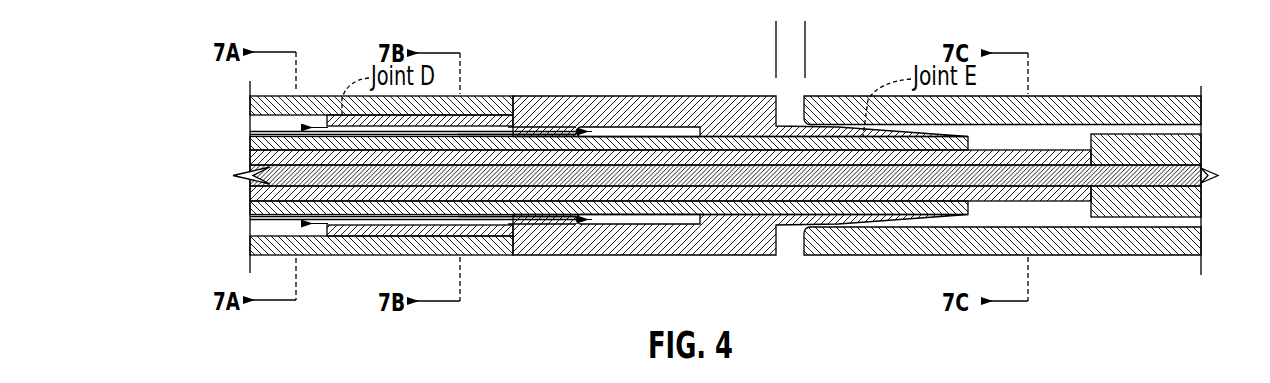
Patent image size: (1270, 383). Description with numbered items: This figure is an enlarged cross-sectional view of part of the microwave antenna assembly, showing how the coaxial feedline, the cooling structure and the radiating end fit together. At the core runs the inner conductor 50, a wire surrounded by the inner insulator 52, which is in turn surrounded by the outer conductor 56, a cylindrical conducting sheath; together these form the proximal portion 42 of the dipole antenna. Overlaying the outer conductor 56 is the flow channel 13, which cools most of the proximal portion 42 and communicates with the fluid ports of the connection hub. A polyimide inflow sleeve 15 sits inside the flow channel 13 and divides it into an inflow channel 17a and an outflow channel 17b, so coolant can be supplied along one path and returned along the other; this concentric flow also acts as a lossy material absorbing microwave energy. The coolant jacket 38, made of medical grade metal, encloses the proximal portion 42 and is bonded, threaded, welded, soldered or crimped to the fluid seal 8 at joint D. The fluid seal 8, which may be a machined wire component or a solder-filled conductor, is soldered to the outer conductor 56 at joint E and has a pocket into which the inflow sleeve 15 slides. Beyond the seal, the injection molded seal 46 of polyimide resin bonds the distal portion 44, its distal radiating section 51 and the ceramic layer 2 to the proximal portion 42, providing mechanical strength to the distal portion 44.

The ceramic layer 2 is at (1182, 101).
The fluid seal 8 is at (662, 244).
The flow channel 13 is at (243, 207).
The polyimide inflow sleeve 15 is at (243, 213).
The inflow channel 17a is at (452, 209).
The outflow channel 17b is at (500, 216).
The coolant jacket 38 is at (247, 247).
The proximal portion 42 is at (768, 33).
The distal portion 44 is at (797, 33).
The injection molded seal 46 is at (1180, 222).
The inner conductor 50 is at (244, 141).
The distal radiating section 51 is at (1188, 145).
The inner insulator 52 is at (242, 167).
The outer conductor 56 is at (243, 185).